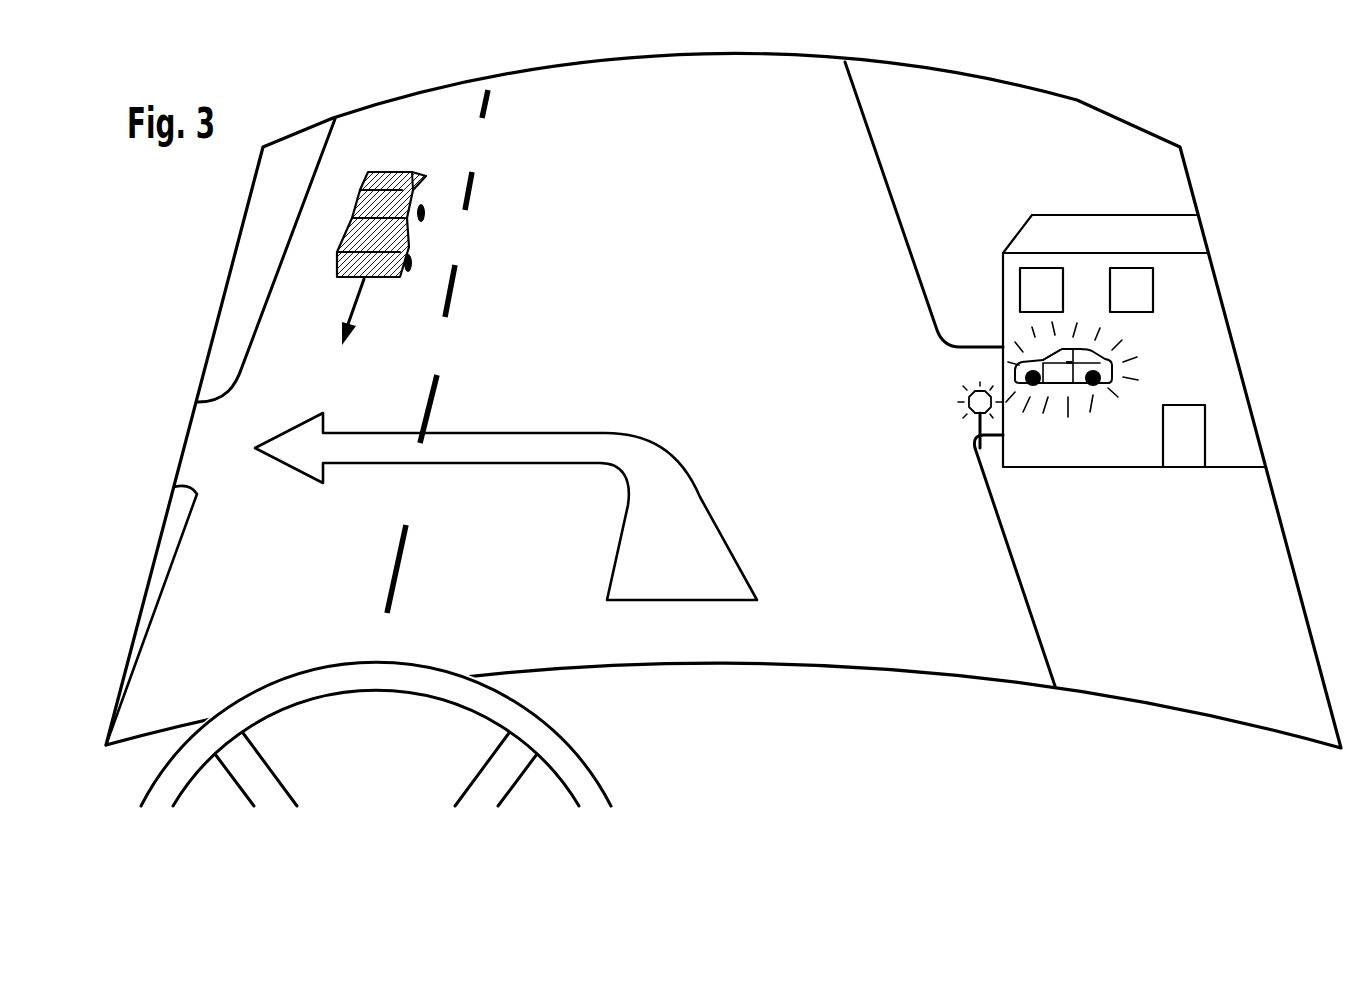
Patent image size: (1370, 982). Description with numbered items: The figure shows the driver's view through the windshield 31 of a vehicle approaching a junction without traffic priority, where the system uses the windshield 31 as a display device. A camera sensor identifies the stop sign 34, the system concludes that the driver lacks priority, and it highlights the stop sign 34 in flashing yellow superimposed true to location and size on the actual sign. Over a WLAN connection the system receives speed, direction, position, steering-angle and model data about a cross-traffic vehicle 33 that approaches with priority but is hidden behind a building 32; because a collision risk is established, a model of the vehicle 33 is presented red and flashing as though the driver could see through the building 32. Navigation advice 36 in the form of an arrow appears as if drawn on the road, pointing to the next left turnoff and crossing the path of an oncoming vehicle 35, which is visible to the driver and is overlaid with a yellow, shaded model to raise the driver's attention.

The windshield 31 is at (1077, 100).
The building 32 is at (1210, 322).
The vehicle 33 is at (1015, 372).
The stop sign 34 is at (968, 408).
The oncoming vehicle 35 is at (426, 185).
The navigation advice 36 is at (693, 495).